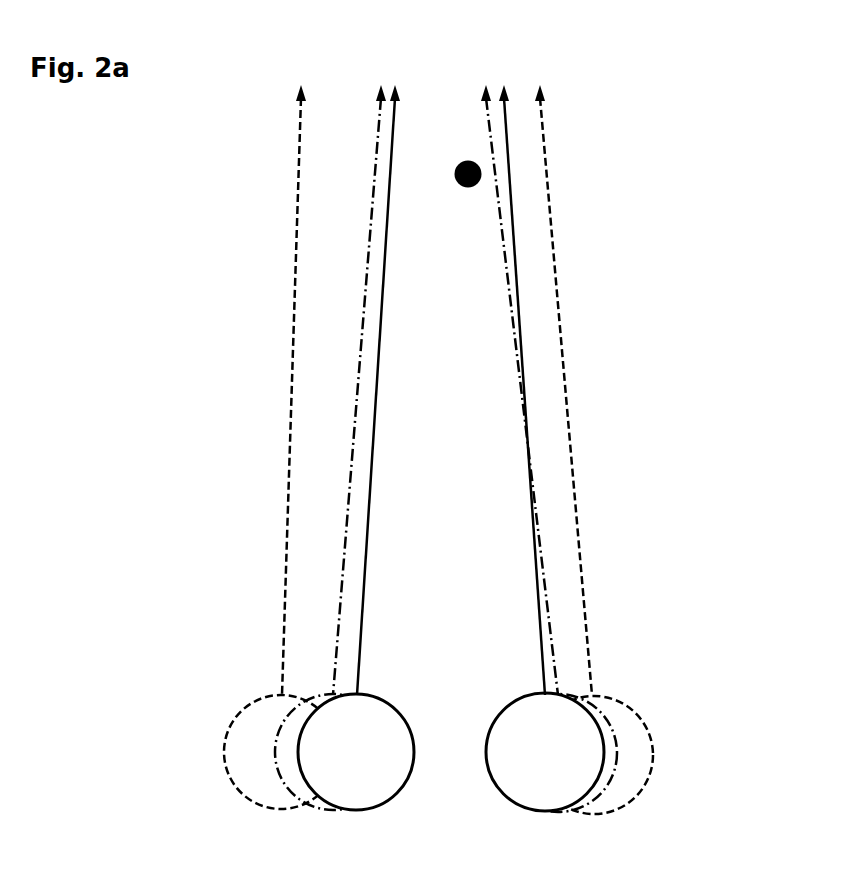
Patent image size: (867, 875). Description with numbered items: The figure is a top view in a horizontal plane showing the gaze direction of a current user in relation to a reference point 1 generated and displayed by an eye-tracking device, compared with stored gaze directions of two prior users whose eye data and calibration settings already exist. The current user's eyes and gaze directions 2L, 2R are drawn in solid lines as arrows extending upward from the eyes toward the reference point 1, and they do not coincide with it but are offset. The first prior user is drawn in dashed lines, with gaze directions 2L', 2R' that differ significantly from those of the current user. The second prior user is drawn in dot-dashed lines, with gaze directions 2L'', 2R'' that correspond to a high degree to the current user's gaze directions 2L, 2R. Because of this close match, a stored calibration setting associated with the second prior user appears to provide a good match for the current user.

The reference point 1 is at (458, 162).
The gaze direction of left eye 2L is at (371, 447).
The gaze direction of left eye of first prior user 2L' is at (242, 447).
The gaze direction of left eye of second prior user 2L'' is at (280, 447).
The gaze direction of right eye 2R is at (528, 448).
The gaze direction of right eye of first prior user 2R' is at (630, 449).
The gaze direction of right eye of second prior user 2R'' is at (620, 448).